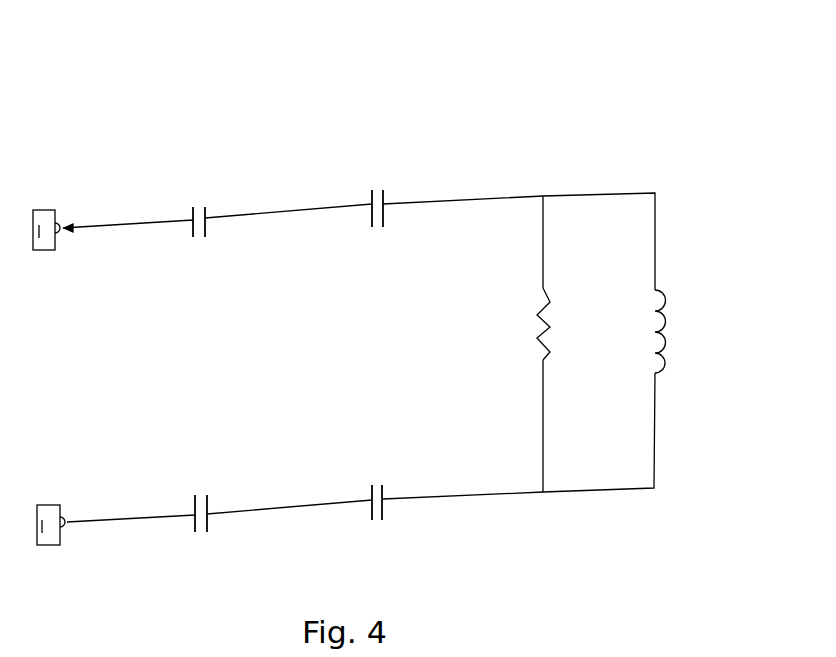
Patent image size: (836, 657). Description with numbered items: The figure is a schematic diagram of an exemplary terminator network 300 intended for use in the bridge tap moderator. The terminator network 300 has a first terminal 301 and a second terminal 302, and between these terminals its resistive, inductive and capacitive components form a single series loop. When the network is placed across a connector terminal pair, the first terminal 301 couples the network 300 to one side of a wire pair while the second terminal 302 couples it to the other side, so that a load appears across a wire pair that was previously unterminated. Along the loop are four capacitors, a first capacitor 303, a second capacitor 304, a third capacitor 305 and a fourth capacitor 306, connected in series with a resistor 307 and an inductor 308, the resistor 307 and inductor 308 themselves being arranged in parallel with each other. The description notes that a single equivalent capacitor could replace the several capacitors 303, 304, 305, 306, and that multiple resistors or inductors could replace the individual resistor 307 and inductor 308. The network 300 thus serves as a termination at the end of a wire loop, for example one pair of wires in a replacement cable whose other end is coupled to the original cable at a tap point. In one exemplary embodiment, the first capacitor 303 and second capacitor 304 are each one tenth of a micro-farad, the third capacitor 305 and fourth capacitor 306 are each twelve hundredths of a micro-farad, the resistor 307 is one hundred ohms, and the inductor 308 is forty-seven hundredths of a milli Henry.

The terminator network 300 is at (350, 65).
The first terminal 301 is at (57, 213).
The second terminal 302 is at (62, 510).
The capacitor C1 303 is at (206, 210).
The capacitor C2 304 is at (208, 503).
The capacitor C3 305 is at (386, 193).
The capacitor C4 306 is at (385, 492).
The resistor R1 307 is at (548, 315).
The inductor L1 308 is at (665, 292).